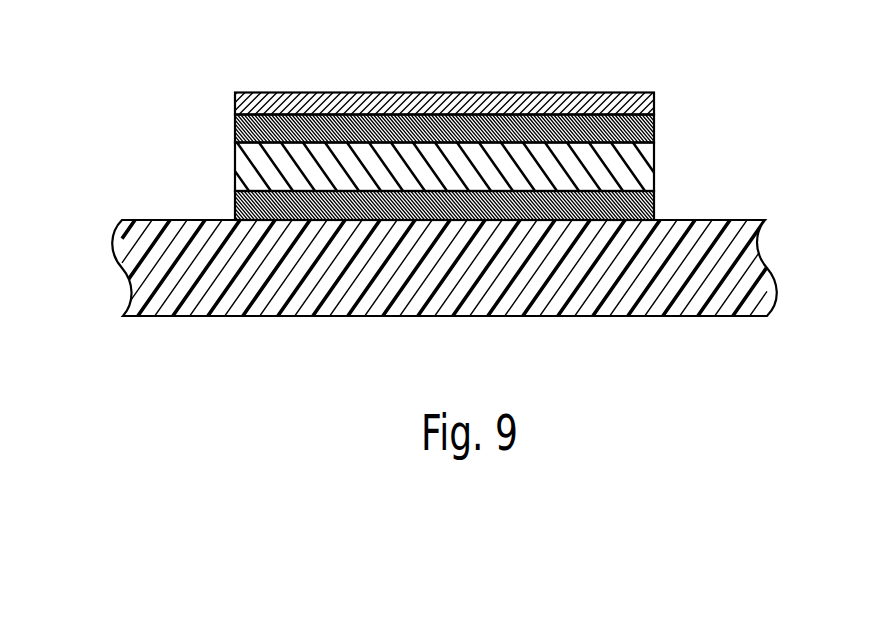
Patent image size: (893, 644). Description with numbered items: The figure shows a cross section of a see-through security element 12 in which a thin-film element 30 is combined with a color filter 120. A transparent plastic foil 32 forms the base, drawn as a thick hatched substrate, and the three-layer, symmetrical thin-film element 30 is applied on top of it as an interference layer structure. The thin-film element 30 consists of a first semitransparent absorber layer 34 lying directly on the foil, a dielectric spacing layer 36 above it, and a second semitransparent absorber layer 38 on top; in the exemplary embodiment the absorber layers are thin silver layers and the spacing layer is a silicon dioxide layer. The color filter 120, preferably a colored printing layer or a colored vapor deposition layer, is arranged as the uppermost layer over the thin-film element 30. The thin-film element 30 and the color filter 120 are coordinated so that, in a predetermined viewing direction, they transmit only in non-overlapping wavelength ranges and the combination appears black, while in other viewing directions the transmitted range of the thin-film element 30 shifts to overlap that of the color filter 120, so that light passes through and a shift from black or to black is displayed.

The see-through security element 12 is at (439, 173).
The color filter 120 is at (622, 92).
The second semitransparent absorber layer 38 is at (643, 130).
The dielectric spacing layer 36 is at (643, 167).
The first semitransparent absorber layer 34 is at (460, 200).
The thin-film element 30 is at (489, 162).
The transparent plastic foil 32 is at (760, 288).